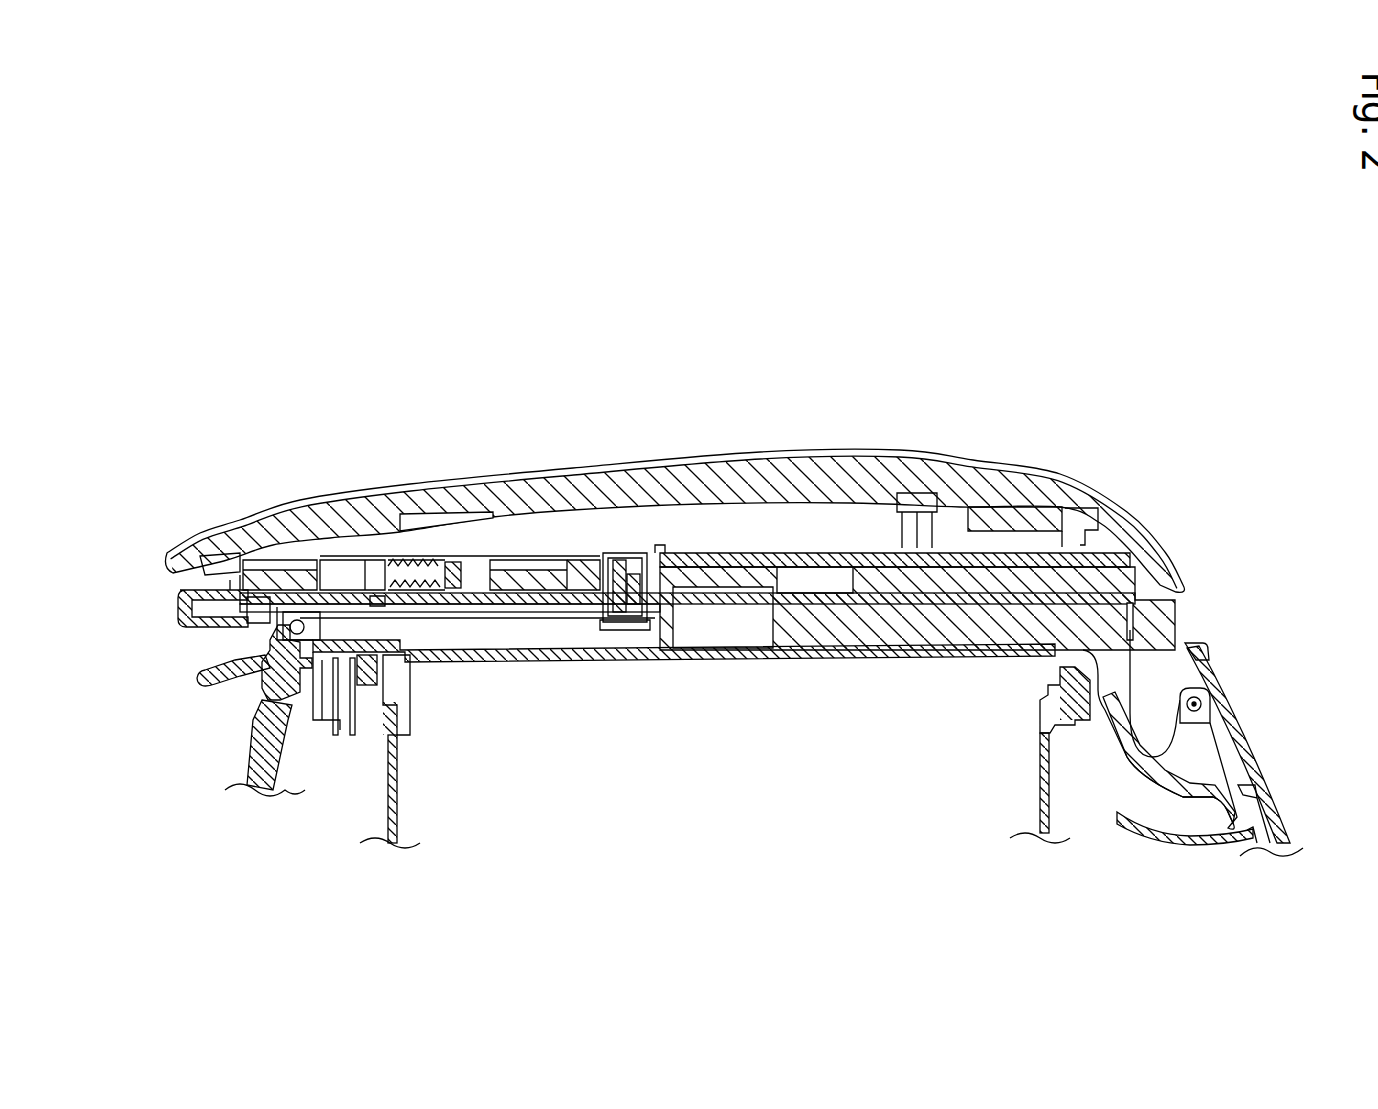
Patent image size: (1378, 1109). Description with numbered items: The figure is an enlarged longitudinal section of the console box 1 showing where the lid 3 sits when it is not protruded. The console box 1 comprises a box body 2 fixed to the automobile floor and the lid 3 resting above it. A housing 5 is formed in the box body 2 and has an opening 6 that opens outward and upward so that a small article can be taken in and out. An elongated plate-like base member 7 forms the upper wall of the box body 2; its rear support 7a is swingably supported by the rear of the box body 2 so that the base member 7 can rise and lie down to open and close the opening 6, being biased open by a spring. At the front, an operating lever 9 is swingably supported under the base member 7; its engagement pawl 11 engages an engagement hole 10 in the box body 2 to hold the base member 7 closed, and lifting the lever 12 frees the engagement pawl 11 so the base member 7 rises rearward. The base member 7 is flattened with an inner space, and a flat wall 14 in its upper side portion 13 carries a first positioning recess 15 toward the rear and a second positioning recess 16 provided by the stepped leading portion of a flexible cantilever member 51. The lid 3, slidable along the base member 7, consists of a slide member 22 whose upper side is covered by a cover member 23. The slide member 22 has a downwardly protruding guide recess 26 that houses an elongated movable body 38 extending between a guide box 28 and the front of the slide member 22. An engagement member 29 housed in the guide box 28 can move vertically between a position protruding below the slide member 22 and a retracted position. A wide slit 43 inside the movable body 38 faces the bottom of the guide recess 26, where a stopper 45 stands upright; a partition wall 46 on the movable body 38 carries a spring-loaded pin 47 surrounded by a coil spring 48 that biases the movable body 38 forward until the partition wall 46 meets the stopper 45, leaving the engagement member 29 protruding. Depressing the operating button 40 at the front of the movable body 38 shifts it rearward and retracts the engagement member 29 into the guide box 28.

The console box 1 is at (1102, 320).
The box body 2 is at (1252, 740).
The lid 3 is at (768, 342).
The housing 5 is at (1038, 780).
The opening 6 is at (1048, 672).
The base member 7 is at (722, 628).
The support 7a is at (1198, 694).
The operating lever 9 is at (192, 684).
The engagement hole 10 is at (293, 710).
The engagement pawl 11 is at (267, 707).
The lever 12 is at (205, 673).
The upper side portion 13 is at (687, 676).
The flat wall 14 is at (548, 610).
The first positioning recess 15 is at (621, 620).
The second positioning recess 16 is at (398, 650).
The slide member 22 is at (789, 546).
The cover member 23 is at (764, 445).
The guide recess 26 is at (300, 525).
The guide box 28 is at (637, 556).
The engagement member 29 is at (622, 556).
The movable body 38 is at (554, 555).
The operating button 40 is at (180, 607).
The wide slit 43 is at (482, 560).
The stopper 45 is at (347, 572).
The partition wall 46 is at (377, 597).
The spring-loaded pin 47 is at (437, 572).
The coil spring 48 is at (477, 572).
The cantilever member 51 is at (462, 610).